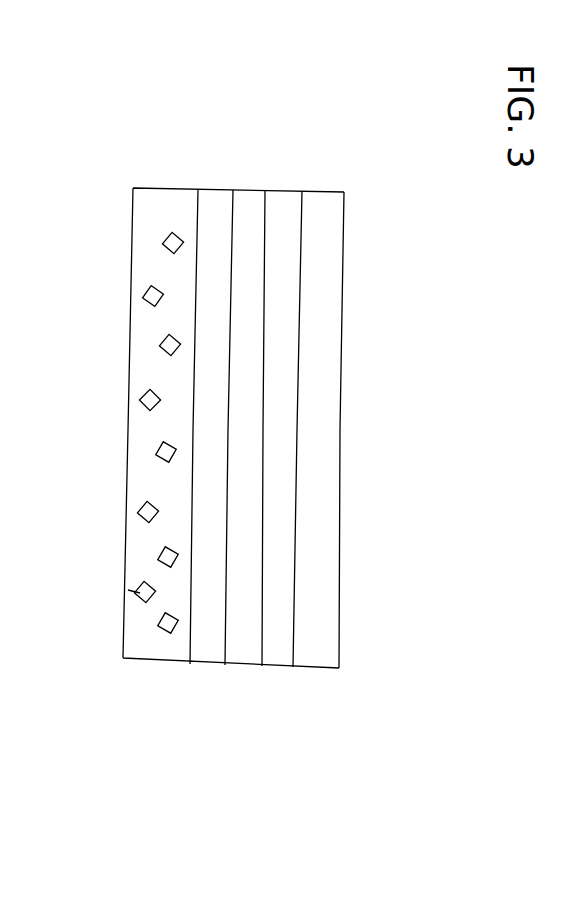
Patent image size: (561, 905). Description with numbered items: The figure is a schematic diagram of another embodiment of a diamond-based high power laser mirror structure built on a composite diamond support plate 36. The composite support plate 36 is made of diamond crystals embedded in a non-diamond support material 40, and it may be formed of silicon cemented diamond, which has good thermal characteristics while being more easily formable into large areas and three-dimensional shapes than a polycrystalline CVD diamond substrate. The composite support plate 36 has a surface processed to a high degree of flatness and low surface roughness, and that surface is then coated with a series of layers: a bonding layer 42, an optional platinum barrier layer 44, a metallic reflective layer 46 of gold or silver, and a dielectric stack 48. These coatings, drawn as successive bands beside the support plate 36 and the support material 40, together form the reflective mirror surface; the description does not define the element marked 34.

The matrix layer 34 is at (138, 593).
The composite diamond support plate 36 is at (133, 288).
The non-diamond support material 40 is at (139, 442).
The bonding layer 42 is at (200, 667).
The platinum barrier layer 44 is at (249, 208).
The metallic reflective layer 46 is at (273, 667).
The dielectric stack 48 is at (317, 620).